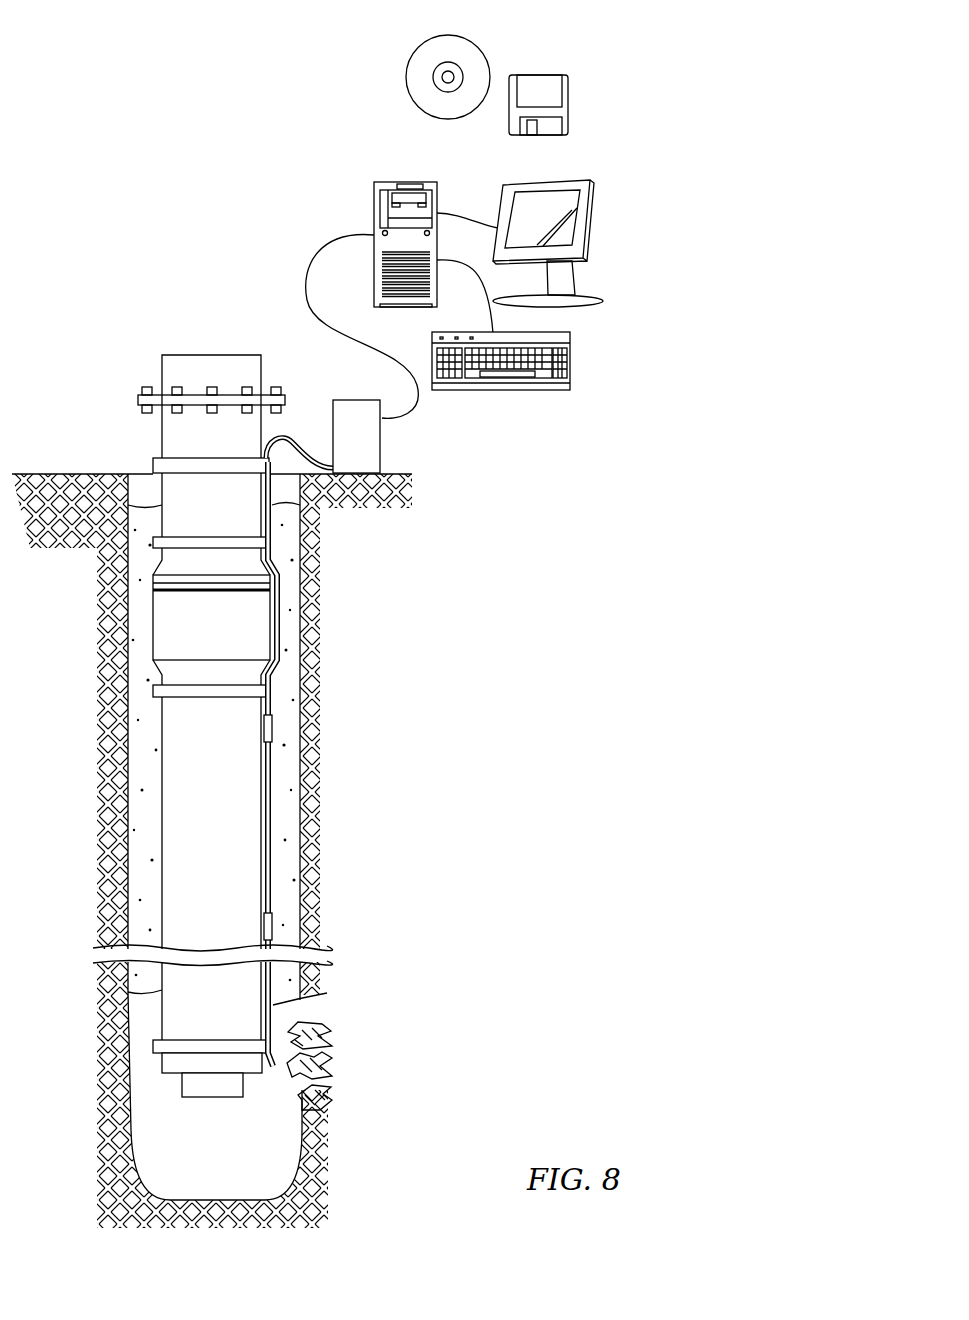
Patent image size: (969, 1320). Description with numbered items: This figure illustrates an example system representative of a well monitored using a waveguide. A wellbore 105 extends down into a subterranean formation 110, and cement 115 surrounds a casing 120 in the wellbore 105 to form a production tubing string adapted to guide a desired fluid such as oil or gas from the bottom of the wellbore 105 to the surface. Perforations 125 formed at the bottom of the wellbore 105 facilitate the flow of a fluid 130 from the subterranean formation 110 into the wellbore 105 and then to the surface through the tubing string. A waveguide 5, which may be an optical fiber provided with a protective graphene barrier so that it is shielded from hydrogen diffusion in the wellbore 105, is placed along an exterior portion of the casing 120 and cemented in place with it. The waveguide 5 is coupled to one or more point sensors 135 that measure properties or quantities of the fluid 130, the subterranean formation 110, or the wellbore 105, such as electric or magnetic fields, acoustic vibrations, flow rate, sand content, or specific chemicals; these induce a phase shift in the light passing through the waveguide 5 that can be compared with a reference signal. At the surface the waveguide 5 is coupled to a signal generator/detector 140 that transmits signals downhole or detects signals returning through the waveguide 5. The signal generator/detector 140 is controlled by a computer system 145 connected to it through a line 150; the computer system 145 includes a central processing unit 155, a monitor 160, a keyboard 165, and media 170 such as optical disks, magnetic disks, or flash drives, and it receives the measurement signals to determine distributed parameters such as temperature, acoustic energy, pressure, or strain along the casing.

The waveguide 5 is at (290, 442).
The wellbore 105 is at (143, 485).
The subterranean formation 110 is at (88, 517).
The cement 115 is at (282, 732).
The casing 120 is at (252, 610).
The perforations 125 is at (343, 1097).
The fluid 130 is at (250, 1113).
The point sensors 135 is at (273, 927).
The signal generator/detector 140 is at (383, 422).
The computer system 145 is at (478, 212).
The line 150 is at (306, 262).
The central processing unit 155 is at (378, 182).
The monitor 160 is at (592, 212).
The keyboard 165 is at (572, 342).
The media 170 is at (482, 52).